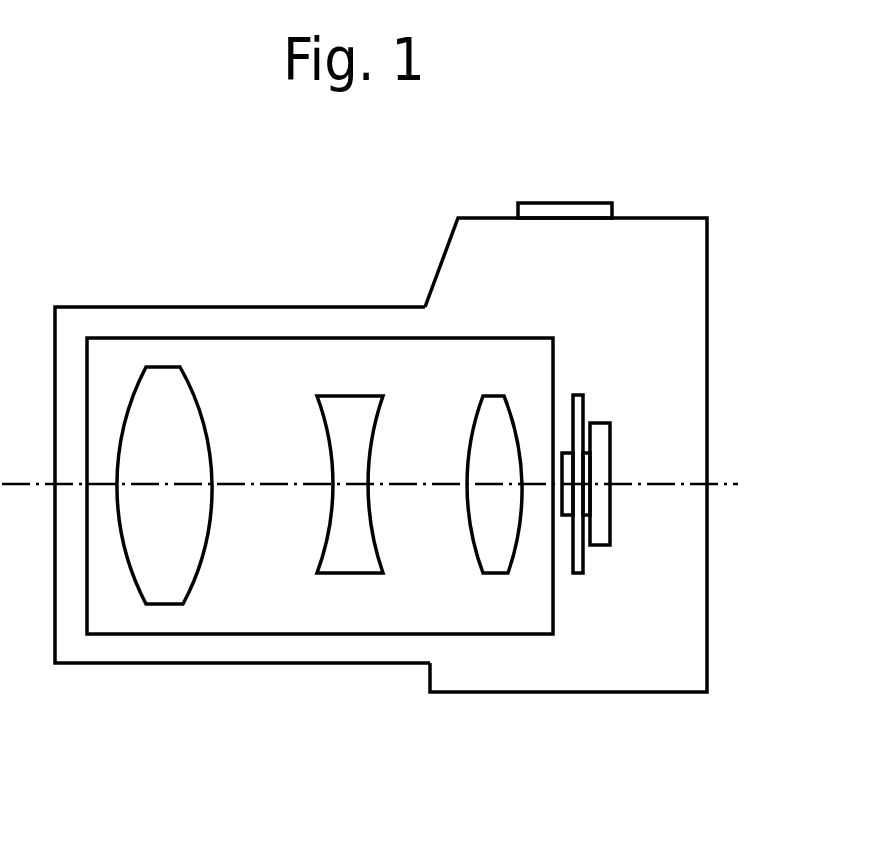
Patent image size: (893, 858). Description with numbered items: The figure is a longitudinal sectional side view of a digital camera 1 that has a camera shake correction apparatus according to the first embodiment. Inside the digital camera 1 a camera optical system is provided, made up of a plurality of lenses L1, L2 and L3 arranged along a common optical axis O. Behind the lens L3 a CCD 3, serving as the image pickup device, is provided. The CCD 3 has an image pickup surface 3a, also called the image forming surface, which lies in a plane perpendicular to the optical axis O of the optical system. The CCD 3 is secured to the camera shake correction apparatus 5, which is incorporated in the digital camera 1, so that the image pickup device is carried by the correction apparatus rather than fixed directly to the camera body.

The digital camera 1 is at (722, 213).
The optical axis O is at (650, 484).
The lens L1 is at (160, 380).
The lens L2 is at (341, 405).
The lens L3 is at (498, 410).
The CCD 3 is at (566, 516).
The image pickup surface 3a is at (556, 492).
The camera shake correction apparatus 5 is at (583, 385).